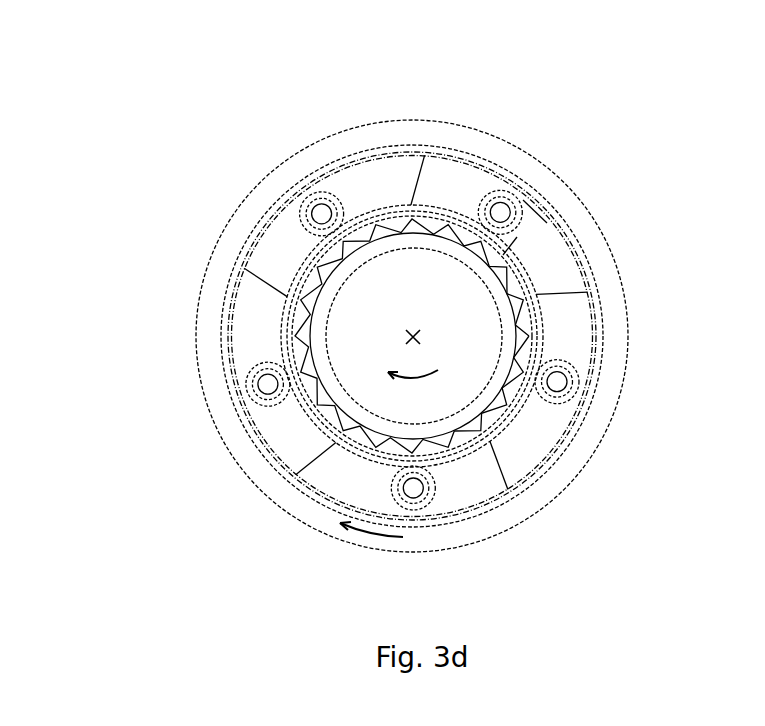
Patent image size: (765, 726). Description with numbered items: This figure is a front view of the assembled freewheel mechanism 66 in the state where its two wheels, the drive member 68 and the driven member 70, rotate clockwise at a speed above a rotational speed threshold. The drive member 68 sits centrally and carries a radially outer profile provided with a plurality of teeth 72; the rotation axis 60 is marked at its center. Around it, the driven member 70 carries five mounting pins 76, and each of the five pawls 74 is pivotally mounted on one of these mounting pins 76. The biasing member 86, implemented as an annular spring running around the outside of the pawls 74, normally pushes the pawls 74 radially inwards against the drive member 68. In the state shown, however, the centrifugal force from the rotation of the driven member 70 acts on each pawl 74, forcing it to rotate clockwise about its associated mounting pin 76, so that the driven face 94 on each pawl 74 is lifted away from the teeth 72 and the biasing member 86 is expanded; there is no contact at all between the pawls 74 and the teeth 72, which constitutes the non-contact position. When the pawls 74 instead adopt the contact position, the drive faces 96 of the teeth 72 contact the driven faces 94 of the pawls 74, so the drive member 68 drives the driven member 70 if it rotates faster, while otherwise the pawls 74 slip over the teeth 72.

The rotation axis / shaft 60 is at (410, 334).
The freewheel mechanism 66 is at (115, 90).
The drive member 68 is at (485, 270).
The driven member 70 is at (457, 138).
The teeth 72 is at (300, 339).
The pawl 74 is at (468, 183).
The mounting pin 76 is at (503, 210).
The biasing member 86 is at (353, 155).
The driven face 94 is at (415, 175).
The drive face 96 is at (513, 250).